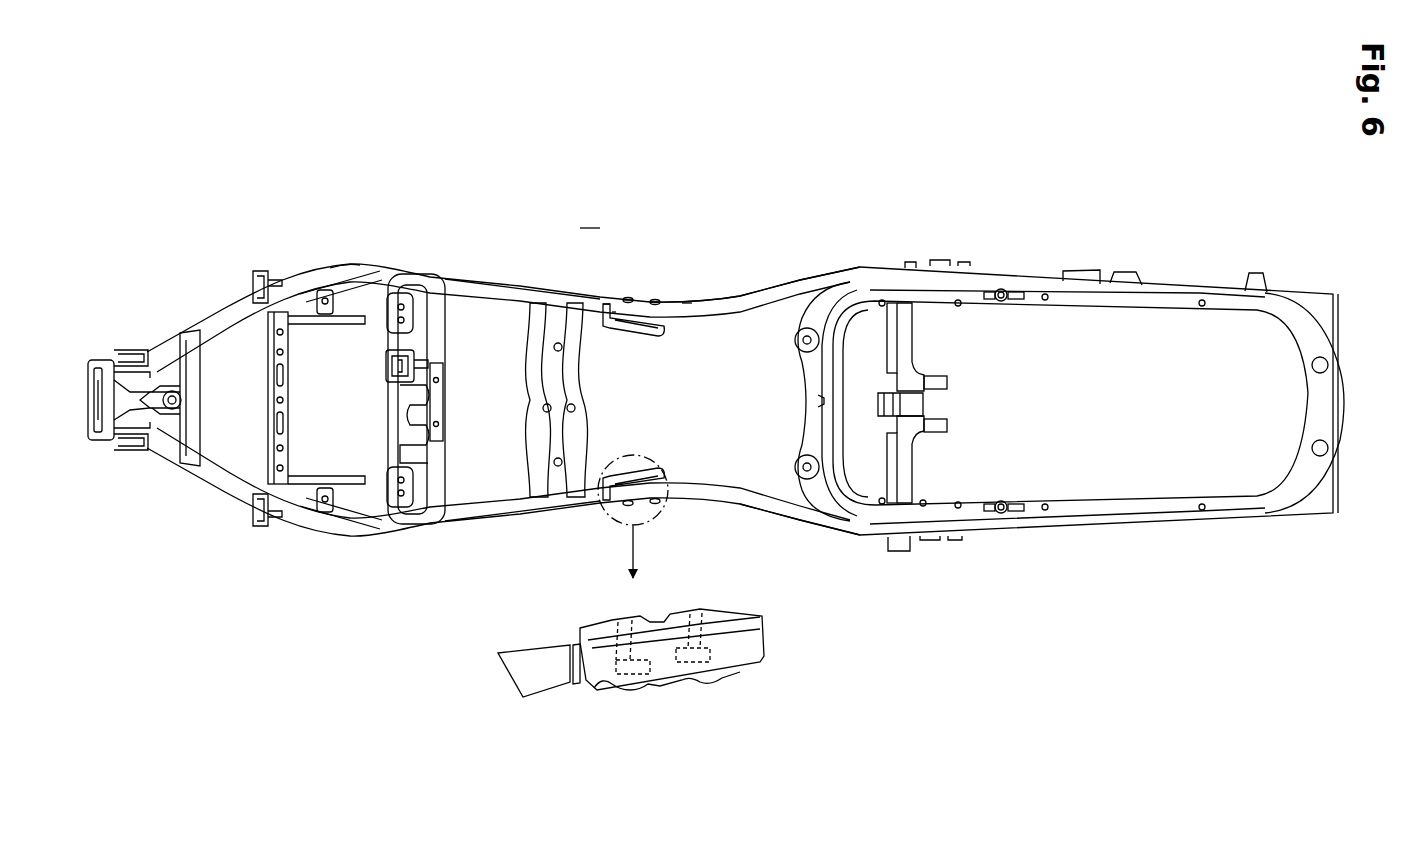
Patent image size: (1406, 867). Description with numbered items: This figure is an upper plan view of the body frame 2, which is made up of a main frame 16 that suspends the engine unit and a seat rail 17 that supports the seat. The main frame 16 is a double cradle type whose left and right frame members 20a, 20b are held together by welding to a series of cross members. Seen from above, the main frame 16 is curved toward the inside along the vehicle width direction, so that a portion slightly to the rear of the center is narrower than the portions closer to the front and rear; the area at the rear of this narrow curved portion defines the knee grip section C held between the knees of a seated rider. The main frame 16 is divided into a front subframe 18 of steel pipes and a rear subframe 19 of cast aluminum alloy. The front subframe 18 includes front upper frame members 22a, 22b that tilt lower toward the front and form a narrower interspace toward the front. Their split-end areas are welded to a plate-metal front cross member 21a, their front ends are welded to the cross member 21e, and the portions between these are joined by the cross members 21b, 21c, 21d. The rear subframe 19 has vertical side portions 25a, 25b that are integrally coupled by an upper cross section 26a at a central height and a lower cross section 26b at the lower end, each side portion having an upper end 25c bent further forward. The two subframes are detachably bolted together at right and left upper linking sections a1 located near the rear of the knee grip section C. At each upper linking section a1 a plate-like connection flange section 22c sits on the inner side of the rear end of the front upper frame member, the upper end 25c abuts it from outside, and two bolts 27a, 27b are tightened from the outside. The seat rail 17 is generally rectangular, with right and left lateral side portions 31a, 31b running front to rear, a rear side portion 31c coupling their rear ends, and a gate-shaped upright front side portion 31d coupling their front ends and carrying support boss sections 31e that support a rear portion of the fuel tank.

The body frame 2 is at (585, 226).
The main frame 16 is at (310, 363).
The seat rail 17 is at (1033, 389).
The front subframe 18 is at (355, 262).
The rear subframe 19 is at (706, 298).
The frame member 20a is at (568, 523).
The frame member 20b is at (573, 294).
The front cross member 21a is at (585, 405).
The cross member 21b is at (447, 350).
The cross member 21c is at (390, 348).
The cross member 21d is at (285, 395).
The cross member 21e is at (118, 388).
The front upper frame member 22a is at (474, 514).
The front upper frame member 22b is at (474, 292).
The connection flange section 22c is at (632, 336).
The vertical side portion 25a is at (742, 522).
The vertical side portion 25b is at (746, 292).
The upper end 25c is at (625, 298).
The upper cross section 26a is at (880, 346).
The lower cross section 26b is at (902, 472).
The bolt 27a is at (636, 298).
The bolt 27b is at (654, 300).
The lateral side portion 31a is at (1090, 522).
The lateral side portion 31b is at (1068, 275).
The rear side portion 31c is at (1306, 395).
The front side portion 31d is at (810, 410).
The support boss section 31e is at (795, 340).
The upper linking section a1 is at (614, 298).
The knee grip section c is at (692, 300).